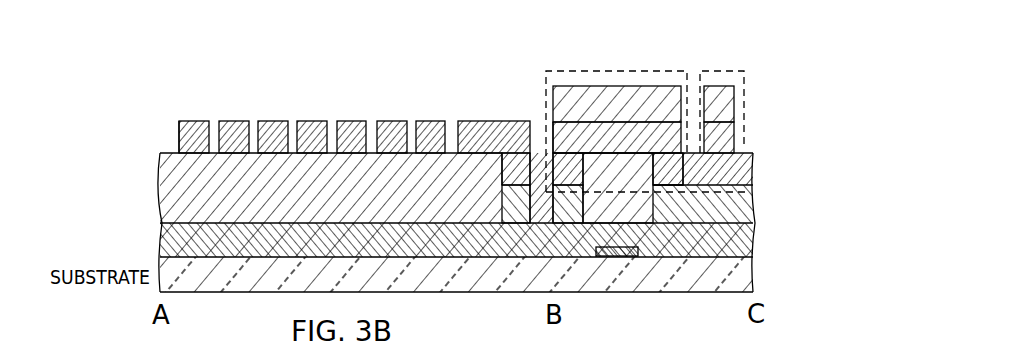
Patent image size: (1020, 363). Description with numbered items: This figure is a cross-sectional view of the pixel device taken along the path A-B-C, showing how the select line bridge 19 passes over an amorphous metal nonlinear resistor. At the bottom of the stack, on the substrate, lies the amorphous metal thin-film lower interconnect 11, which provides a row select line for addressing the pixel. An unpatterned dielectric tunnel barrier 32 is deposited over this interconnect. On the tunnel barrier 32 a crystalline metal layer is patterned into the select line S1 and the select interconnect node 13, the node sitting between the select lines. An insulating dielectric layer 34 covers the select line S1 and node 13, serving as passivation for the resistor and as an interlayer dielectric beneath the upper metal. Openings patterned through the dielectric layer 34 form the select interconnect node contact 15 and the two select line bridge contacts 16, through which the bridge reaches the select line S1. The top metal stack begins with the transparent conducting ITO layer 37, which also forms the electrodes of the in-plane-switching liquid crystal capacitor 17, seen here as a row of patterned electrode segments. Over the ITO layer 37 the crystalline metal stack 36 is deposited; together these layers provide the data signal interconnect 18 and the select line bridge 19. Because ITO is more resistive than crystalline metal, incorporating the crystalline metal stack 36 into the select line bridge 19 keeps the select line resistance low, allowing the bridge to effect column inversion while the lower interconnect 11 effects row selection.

The AMNR lower interconnect 11 is at (622, 257).
The select interconnect node 13 is at (502, 208).
The select interconnect node contact 15 is at (499, 172).
The select line bridge contacts 16 is at (686, 172).
The IPS liquid crystal capacitor 17 is at (279, 120).
The data signal interconnect 18 is at (748, 110).
The select line bridge 19 is at (545, 72).
The tunnel barrier 32 is at (757, 242).
The insulating dielectric layer 34 is at (160, 188).
The crystalline metal stack 36 is at (650, 86).
The ITO layer 37 is at (176, 133).
The select line S1 is at (756, 220).